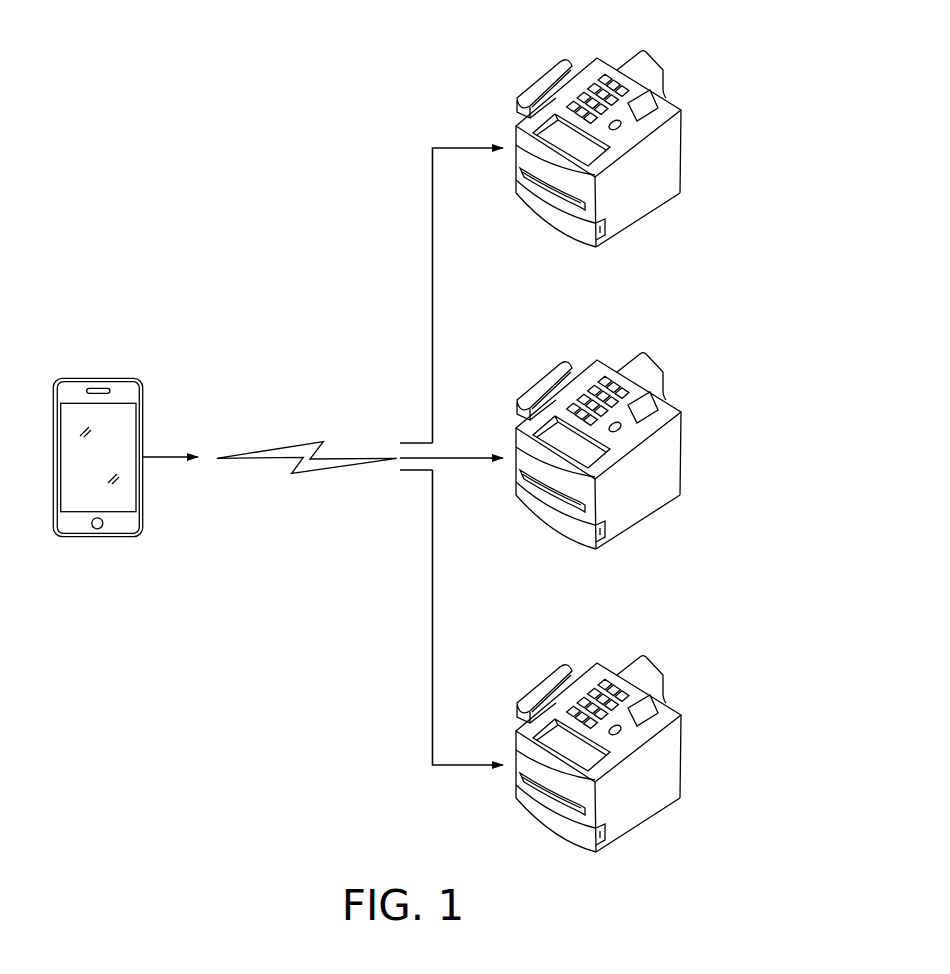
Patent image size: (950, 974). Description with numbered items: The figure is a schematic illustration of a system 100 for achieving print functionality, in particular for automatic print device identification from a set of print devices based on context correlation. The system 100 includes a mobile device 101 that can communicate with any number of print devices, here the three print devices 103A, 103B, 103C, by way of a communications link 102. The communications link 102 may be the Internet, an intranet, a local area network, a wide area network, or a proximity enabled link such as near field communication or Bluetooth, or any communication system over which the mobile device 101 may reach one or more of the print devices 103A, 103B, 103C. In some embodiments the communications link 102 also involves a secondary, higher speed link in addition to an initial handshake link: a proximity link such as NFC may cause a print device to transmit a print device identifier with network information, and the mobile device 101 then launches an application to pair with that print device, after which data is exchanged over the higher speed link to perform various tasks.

The system 100 is at (246, 48).
The mobile device 101 is at (97, 378).
The communications link 102 is at (295, 443).
The print device 103A is at (645, 200).
The print device 103B is at (645, 502).
The print device 103C is at (644, 804).